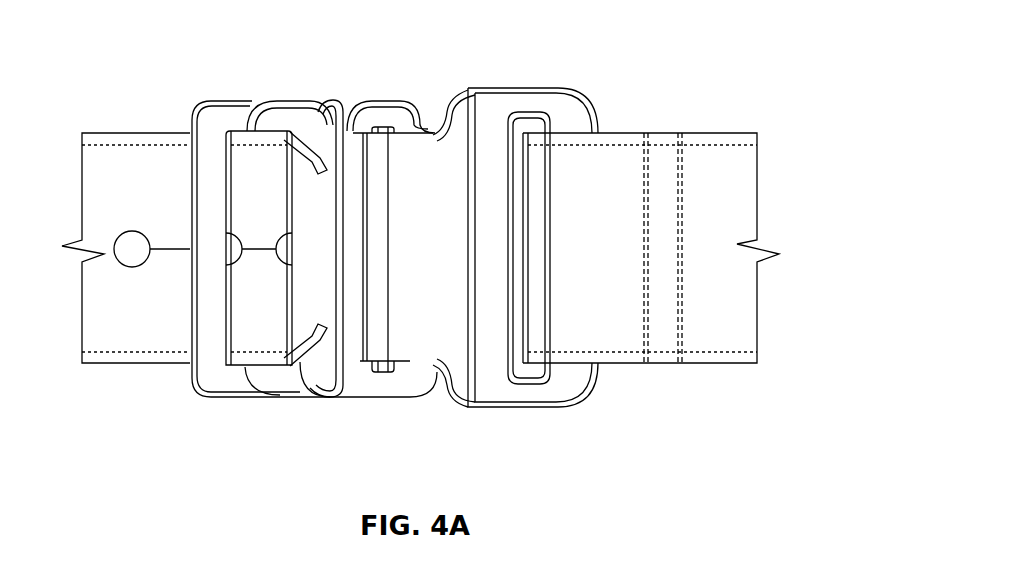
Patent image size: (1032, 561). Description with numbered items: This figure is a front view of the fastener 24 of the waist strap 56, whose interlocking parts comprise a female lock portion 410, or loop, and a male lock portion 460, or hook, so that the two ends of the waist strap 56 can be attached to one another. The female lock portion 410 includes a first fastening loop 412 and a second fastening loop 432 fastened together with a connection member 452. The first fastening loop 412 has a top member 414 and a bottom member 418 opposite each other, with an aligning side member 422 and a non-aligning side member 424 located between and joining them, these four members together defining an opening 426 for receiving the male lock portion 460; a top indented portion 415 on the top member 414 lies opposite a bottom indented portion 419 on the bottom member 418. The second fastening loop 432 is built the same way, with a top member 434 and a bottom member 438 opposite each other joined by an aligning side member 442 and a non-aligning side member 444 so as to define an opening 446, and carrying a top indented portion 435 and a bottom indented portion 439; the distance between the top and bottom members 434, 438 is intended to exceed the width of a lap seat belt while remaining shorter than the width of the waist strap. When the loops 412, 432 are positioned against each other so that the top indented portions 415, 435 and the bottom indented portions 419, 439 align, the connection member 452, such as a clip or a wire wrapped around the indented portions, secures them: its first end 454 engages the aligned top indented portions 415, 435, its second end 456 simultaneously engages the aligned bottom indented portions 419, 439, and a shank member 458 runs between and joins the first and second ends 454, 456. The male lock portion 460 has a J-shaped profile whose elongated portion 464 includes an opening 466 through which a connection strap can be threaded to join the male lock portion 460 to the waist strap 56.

The fastener 24 is at (525, 80).
The waist strap 56 is at (122, 365).
The female lock portion 410 is at (296, 255).
The first fastening loop 412 is at (185, 218).
The top member 414 is at (236, 105).
The top indented portion 415 is at (392, 82).
The bottom member 418 is at (233, 377).
The bottom indented portion 419 is at (340, 400).
The aligning side member 422 is at (372, 352).
The non-aligning side member 424 is at (210, 190).
The opening 426 is at (207, 123).
The second fastening loop 432 is at (278, 395).
The top member 434 is at (295, 91).
The top indented portion 435 is at (350, 102).
The bottom member 438 is at (392, 383).
The bottom indented portion 439 is at (365, 393).
The aligning side member 442 is at (415, 131).
The non-aligning side member 444 is at (331, 249).
The opening 446 is at (320, 338).
The connection member 452 is at (323, 103).
The first end 454 is at (331, 96).
The second end 456 is at (290, 301).
The shank member 458 is at (345, 258).
The male lock portion 460 is at (515, 252).
The elongated portion 464 is at (437, 113).
The opening 466 is at (537, 370).